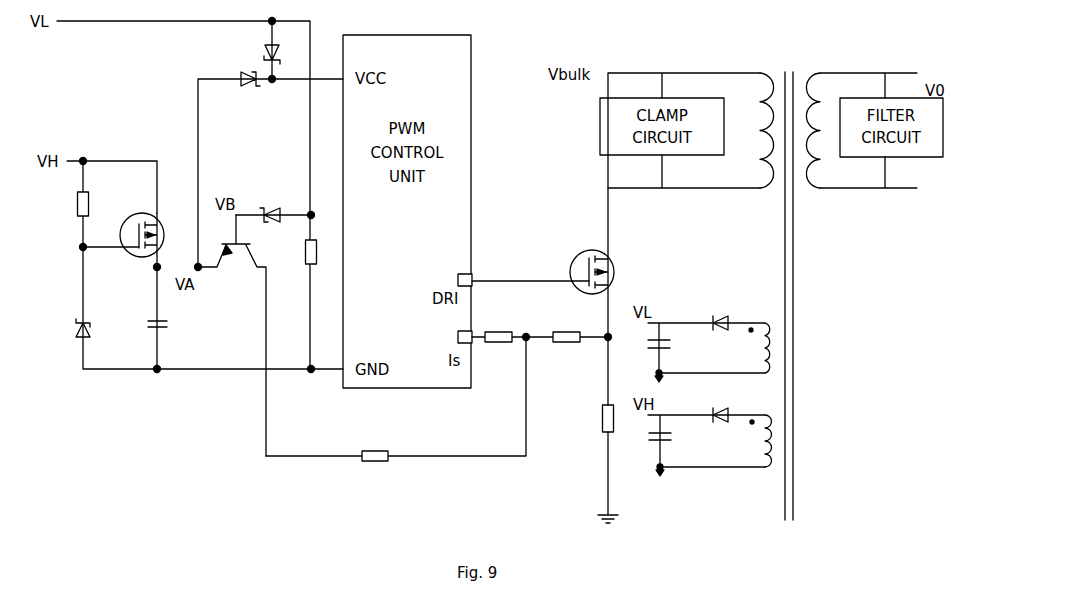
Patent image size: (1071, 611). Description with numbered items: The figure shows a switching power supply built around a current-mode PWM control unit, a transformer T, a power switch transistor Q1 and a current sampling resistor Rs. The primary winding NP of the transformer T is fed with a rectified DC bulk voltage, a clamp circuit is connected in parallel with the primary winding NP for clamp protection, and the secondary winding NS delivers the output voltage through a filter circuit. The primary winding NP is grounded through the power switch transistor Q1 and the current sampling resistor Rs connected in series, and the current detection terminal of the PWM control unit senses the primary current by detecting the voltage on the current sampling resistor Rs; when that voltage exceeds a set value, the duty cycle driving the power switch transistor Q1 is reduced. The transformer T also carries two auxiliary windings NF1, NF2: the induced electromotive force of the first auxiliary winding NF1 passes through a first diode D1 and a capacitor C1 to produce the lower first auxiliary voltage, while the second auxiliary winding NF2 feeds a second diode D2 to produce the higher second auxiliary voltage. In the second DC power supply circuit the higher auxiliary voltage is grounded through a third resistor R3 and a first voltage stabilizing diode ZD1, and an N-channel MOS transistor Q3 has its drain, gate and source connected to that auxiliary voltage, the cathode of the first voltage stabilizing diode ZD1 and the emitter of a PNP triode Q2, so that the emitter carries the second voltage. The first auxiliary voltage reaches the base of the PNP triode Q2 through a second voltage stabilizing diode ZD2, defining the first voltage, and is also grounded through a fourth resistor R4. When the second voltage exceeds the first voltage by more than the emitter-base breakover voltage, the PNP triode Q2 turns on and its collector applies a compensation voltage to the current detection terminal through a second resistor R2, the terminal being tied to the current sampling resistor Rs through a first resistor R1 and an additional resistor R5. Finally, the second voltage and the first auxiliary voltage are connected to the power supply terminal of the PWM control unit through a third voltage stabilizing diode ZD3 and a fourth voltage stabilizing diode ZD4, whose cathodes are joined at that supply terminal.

The first voltage stabilizing diode ZD1 is at (98, 320).
The second voltage stabilizing diode ZD2 is at (273, 206).
The third voltage stabilizing diode ZD3 is at (249, 92).
The fourth voltage stabilizing diode ZD4 is at (254, 50).
The first resistor R1 is at (566, 325).
The second resistor R2 is at (396, 399).
The third resistor R3 is at (97, 204).
The fourth resistor R4 is at (298, 252).
The resistor R5 is at (498, 326).
The current sampling resistor Rs is at (600, 464).
The power switch transistor Q1 is at (587, 296).
The PNP triode Q2 is at (232, 335).
The N-channel MOS transistor Q3 is at (135, 239).
The capacitor C1 is at (173, 318).
The first diode D1 is at (712, 316).
The second diode D2 is at (712, 408).
The first auxiliary winding NF1 is at (709, 352).
The second auxiliary winding NF2 is at (710, 445).
The primary winding NP is at (752, 130).
The secondary winding NS is at (819, 130).
The transformer T is at (788, 284).